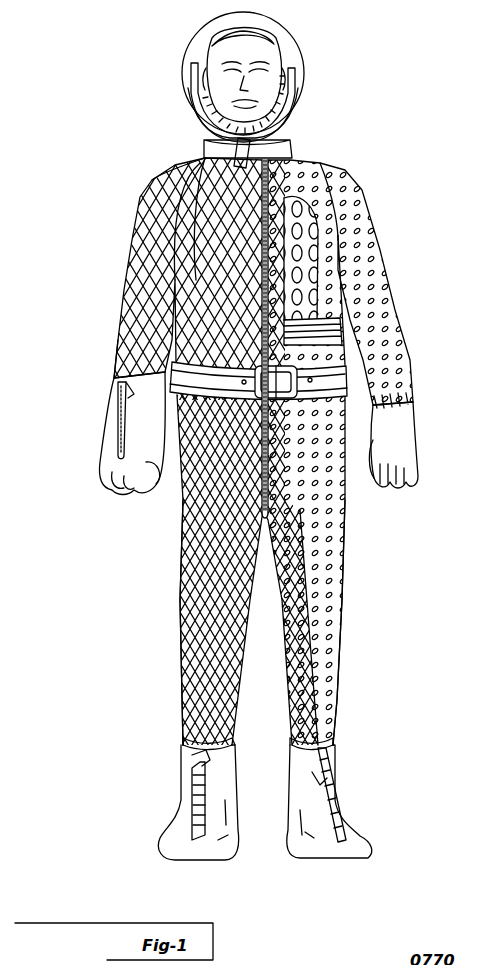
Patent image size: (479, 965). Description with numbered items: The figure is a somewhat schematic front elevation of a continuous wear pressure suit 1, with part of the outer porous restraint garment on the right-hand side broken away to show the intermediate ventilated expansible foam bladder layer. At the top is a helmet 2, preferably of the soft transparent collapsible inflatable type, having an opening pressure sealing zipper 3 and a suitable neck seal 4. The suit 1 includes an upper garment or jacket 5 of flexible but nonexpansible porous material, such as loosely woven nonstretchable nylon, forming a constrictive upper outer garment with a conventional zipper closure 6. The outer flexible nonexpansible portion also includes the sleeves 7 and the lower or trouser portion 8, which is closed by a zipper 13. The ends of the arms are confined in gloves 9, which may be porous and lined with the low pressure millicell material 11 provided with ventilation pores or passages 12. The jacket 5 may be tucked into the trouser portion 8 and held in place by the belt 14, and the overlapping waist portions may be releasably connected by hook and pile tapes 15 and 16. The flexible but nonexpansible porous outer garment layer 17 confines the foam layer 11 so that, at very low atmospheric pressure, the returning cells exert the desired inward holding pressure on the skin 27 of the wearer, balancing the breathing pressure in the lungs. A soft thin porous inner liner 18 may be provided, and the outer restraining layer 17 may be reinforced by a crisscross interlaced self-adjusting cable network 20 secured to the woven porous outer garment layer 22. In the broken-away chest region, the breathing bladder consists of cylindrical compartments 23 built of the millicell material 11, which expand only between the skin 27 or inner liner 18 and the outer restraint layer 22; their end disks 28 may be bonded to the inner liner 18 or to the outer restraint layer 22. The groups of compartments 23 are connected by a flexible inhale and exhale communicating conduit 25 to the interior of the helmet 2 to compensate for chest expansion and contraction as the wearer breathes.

The pressure suit 1 is at (368, 178).
The helmet 2 is at (305, 37).
The opening pressure sealing zipper 3 is at (310, 104).
The neck seal 4 is at (290, 150).
The upper garment or jacket 5 is at (136, 196).
The zipper closure 6 is at (255, 262).
The sleeves 7 is at (136, 237).
The lower or trouser portion 8 is at (184, 590).
The gloves 9 is at (115, 462).
The low pressure millicell material 11 is at (383, 240).
The ventilation pores or passages 12 is at (390, 342).
The zipper 13 is at (263, 483).
The belt 14 is at (292, 388).
The hook and pile tape 15 is at (160, 387).
The hook and pile tape 16 is at (180, 353).
The outer garment layer 17 is at (230, 293).
The inner liner 18 is at (413, 404).
The cable network 20 is at (128, 318).
The woven porous outer garment layer 22 is at (313, 322).
The cylindrical compartments 23 is at (310, 260).
The inhale and exhale communicating conduit 25 is at (232, 152).
The skin 27 is at (233, 222).
The end disks 28 is at (330, 250).